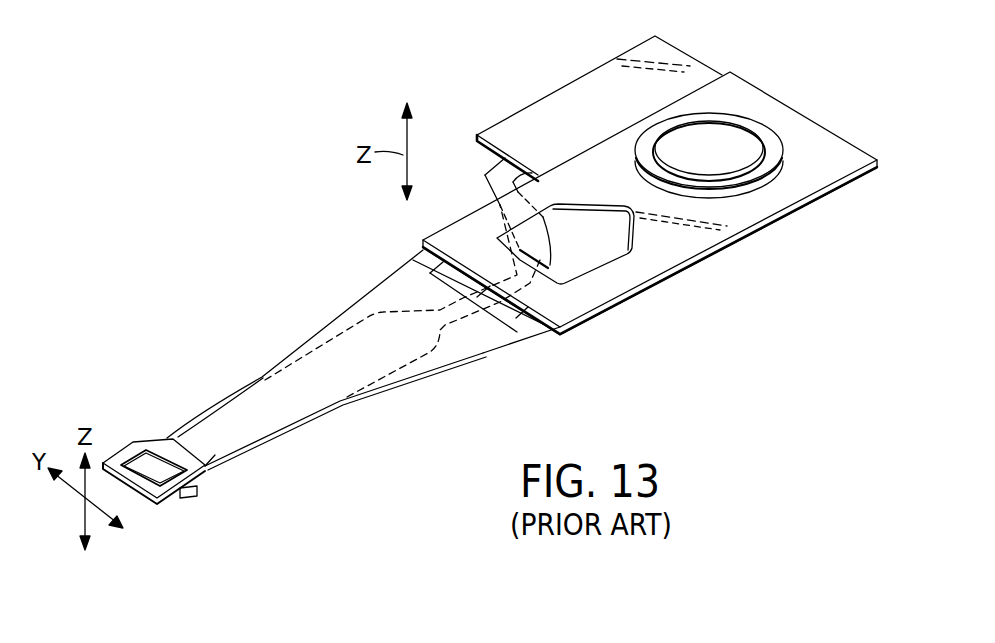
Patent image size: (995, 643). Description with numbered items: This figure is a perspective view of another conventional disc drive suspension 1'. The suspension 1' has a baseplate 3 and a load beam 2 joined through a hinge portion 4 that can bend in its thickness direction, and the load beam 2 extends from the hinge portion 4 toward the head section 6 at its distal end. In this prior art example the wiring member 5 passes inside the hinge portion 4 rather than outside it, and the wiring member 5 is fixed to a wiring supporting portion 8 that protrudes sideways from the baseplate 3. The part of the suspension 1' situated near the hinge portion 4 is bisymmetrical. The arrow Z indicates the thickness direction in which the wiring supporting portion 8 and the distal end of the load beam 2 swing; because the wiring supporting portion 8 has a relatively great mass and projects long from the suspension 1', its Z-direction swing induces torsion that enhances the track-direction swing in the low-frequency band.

The suspension 1' is at (250, 191).
The load beam 2 is at (302, 340).
The baseplate 3 is at (705, 240).
The hinge portion 4 is at (525, 325).
The wiring member 5 is at (535, 252).
The head section 6 is at (170, 512).
The wiring supporting portion 8 is at (555, 102).